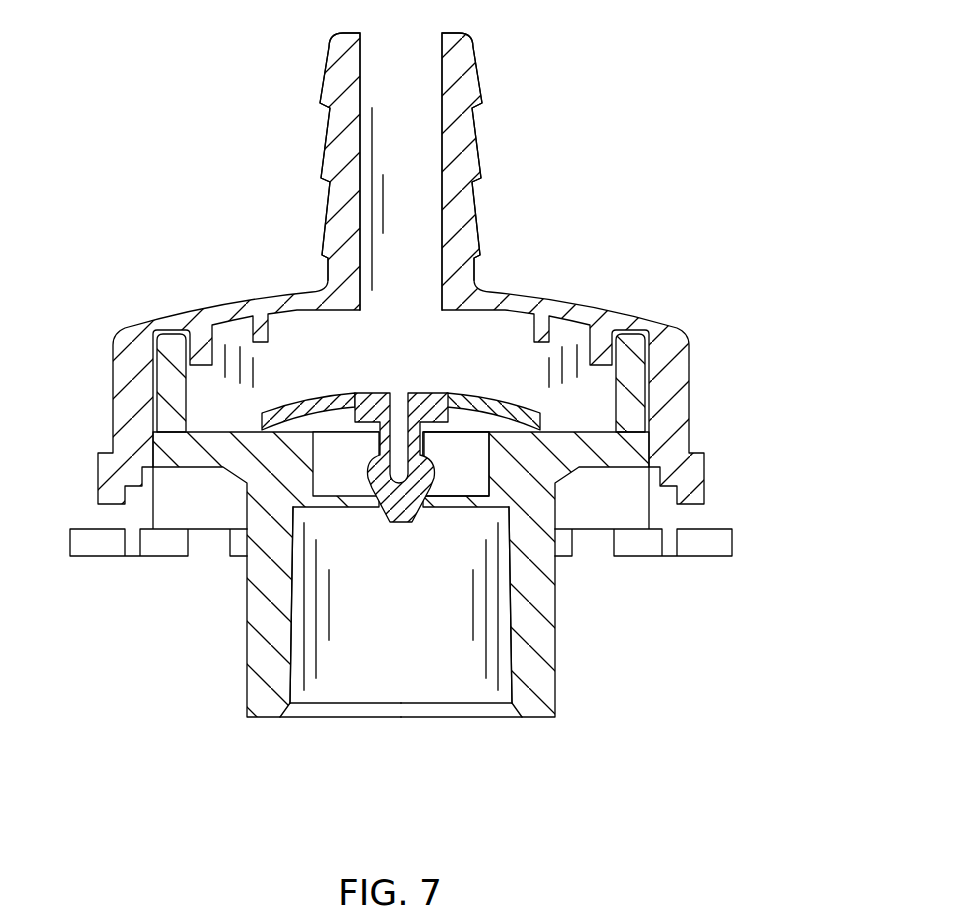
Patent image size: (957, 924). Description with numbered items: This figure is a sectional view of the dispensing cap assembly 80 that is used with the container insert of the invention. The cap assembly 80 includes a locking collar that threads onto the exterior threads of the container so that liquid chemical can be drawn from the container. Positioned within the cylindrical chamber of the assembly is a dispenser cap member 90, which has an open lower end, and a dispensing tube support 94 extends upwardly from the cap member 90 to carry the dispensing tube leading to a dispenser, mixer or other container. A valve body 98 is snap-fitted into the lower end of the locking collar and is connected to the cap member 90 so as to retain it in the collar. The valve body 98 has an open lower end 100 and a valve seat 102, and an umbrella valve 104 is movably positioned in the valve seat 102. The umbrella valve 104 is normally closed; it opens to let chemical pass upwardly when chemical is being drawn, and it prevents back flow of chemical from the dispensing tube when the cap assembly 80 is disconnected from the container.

The dispensing cap assembly 80 is at (683, 307).
The dispenser cap member 90 is at (562, 212).
The dispensing tube support 94 is at (460, 132).
The valve body 98 is at (225, 655).
The open lower end 100 is at (475, 693).
The valve seat 102 is at (460, 467).
The umbrella valve 104 is at (363, 393).